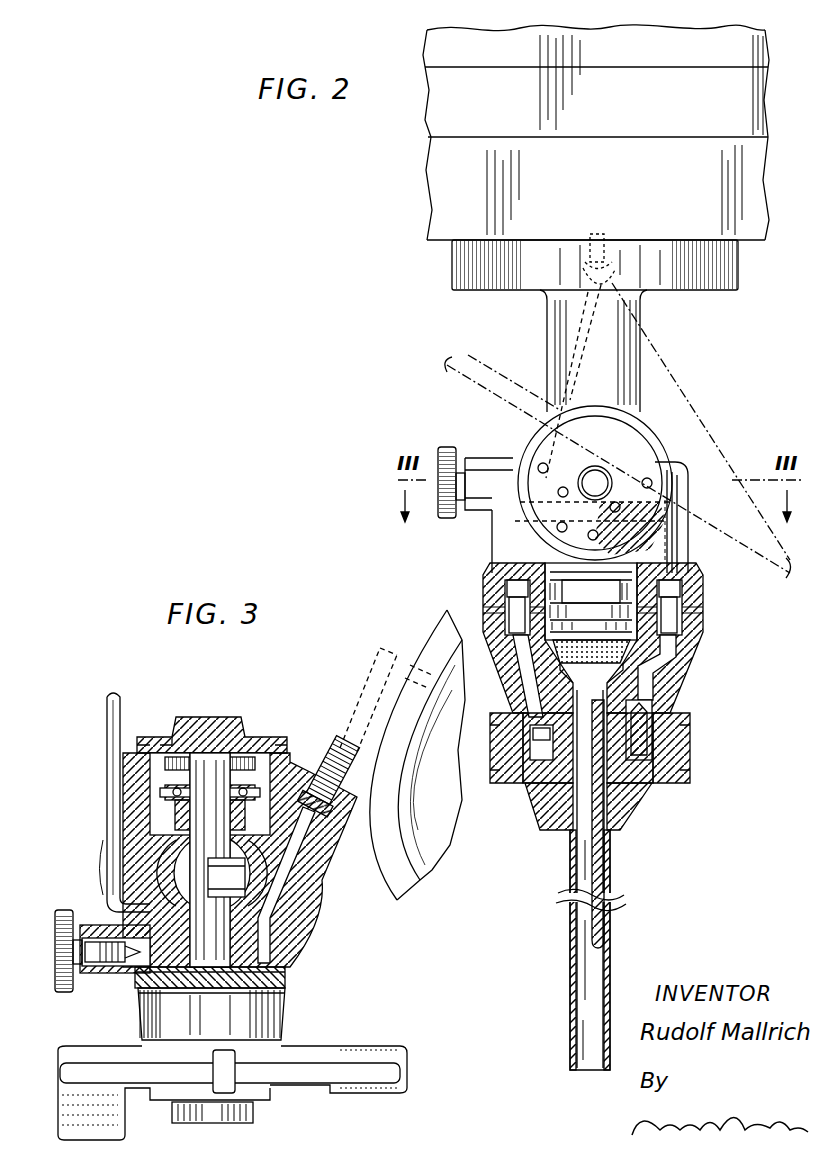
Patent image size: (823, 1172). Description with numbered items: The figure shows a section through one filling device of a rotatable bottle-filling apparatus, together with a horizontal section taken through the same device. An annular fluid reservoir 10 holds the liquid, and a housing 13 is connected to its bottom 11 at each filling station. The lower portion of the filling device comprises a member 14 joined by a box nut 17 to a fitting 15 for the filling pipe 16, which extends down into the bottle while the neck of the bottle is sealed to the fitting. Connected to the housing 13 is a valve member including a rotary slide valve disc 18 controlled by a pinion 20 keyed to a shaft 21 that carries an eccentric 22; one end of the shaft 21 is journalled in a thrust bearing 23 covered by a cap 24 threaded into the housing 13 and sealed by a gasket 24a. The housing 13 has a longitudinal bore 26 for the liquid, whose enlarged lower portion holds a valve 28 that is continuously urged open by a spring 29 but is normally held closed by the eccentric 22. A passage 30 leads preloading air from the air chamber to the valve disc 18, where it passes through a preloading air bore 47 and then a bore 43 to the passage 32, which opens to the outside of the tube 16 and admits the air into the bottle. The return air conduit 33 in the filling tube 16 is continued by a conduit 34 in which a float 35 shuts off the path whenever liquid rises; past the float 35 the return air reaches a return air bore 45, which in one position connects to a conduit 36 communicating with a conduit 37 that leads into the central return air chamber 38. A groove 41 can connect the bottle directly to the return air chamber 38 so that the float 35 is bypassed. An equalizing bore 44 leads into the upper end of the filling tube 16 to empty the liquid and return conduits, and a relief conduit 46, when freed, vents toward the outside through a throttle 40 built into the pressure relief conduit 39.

In FIG. 2, the annular fluid reservoir 10 is at (752, 54).
In FIG. 2, the bottom 11 is at (752, 188).
In FIG. 2, the housing 13 is at (628, 352).
In FIG. 3, the housing 13 is at (292, 908).
In FIG. 2, the member 14 is at (682, 670).
In FIG. 2, the fitting 15 is at (545, 800).
In FIG. 2, the filling pipe 16 is at (568, 898).
In FIG. 2, the box nut 17 is at (690, 745).
In FIG. 2, the rotary slide valve disc 18 is at (628, 432).
In FIG. 2, the pinion 20 is at (470, 355).
In FIG. 3, the pinion 20 is at (270, 1022).
In FIG. 2, the shaft 21 is at (593, 466).
In FIG. 3, the shaft 21 is at (222, 950).
In FIG. 3, the eccentric 22 is at (255, 878).
In FIG. 3, the thrust bearing 23 is at (172, 795).
In FIG. 3, the cap 24 is at (245, 735).
In FIG. 3, the seal 24a is at (160, 745).
In FIG. 2, the longitudinal bore 26 is at (625, 262).
In FIG. 2, the valve 28 is at (678, 652).
In FIG. 2, the spring 29 is at (598, 538).
In FIG. 2, the passage 30 is at (577, 322).
In FIG. 2, the passage 32 is at (492, 573).
In FIG. 2, the return air conduit 33 is at (606, 893).
In FIG. 2, the conduit 34 is at (682, 568).
In FIG. 2, the float 35 is at (650, 722).
In FIG. 2, the conduit 36 is at (652, 480).
In FIG. 3, the conduit 36 is at (300, 837).
In FIG. 3, the conduit 37 is at (372, 670).
In FIG. 3, the central return air chamber 38 is at (437, 866).
In FIG. 3, the conduit 39 is at (106, 725).
In FIG. 2, the throttle 40 is at (450, 447).
In FIG. 3, the throttle 40 is at (90, 940).
In FIG. 3, the groove 41 is at (175, 990).
In FIG. 2, the preloading air bore 43 is at (556, 527).
In FIG. 2, the equalizing bore 44 is at (591, 613).
In FIG. 2, the return air bore 45 is at (618, 502).
In FIG. 2, the relief conduit 46 is at (558, 492).
In FIG. 2, the preloading air bore 47 is at (538, 465).